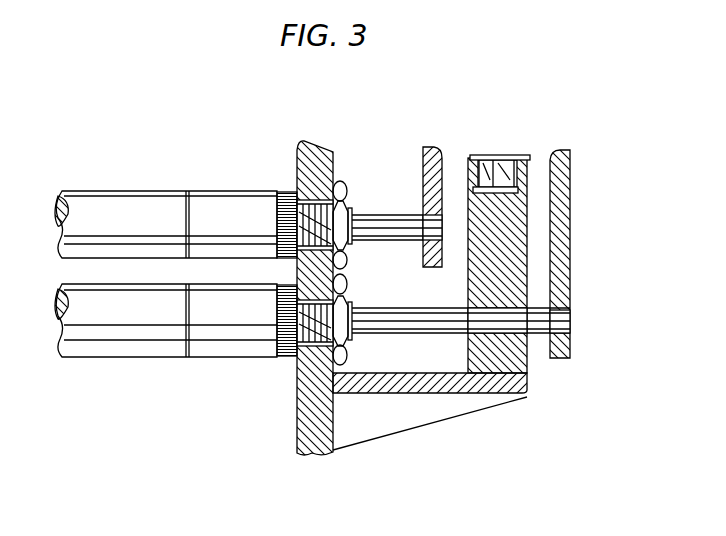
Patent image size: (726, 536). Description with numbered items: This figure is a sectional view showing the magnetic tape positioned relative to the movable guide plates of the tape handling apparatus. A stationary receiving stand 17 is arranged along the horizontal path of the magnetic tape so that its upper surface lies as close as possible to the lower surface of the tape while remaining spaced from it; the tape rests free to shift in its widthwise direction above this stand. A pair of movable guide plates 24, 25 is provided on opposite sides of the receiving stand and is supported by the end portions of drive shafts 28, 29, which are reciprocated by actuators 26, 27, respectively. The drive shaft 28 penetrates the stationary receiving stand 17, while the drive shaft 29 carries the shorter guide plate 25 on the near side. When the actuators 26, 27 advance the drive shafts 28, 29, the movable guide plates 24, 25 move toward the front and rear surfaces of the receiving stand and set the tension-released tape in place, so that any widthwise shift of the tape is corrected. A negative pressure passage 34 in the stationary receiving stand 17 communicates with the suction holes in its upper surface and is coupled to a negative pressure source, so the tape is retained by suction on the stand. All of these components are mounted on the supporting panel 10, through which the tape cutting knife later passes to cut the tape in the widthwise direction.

The supporting panel 10 is at (302, 398).
The stationary receiving stand 17 is at (470, 283).
The movable guide plate 24 is at (571, 246).
The movable guide plate 25 is at (423, 163).
The actuator 26 is at (138, 336).
The actuator 27 is at (120, 193).
The drive shaft 28 is at (404, 324).
The drive shaft 29 is at (386, 237).
The negative pressure passage 34 is at (520, 190).